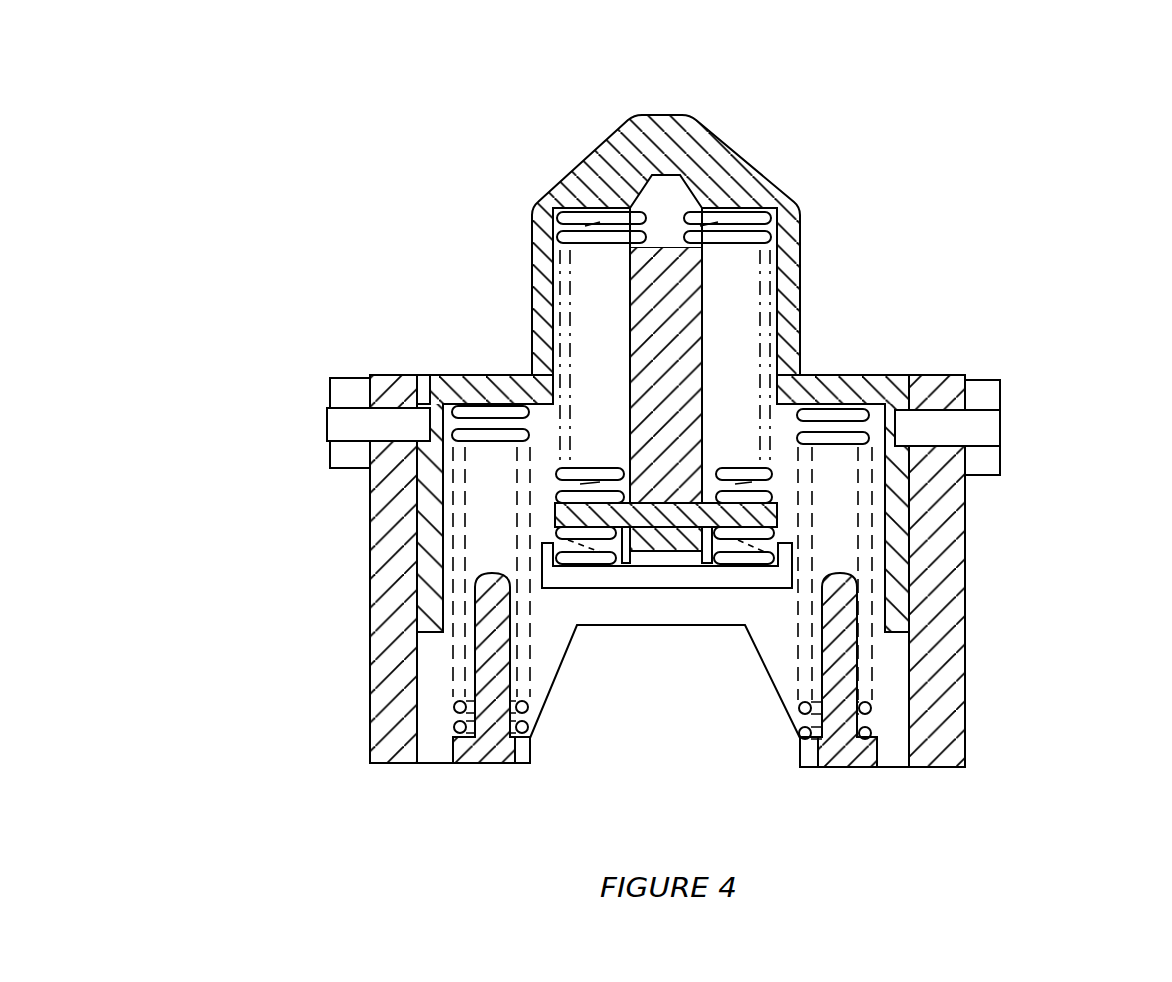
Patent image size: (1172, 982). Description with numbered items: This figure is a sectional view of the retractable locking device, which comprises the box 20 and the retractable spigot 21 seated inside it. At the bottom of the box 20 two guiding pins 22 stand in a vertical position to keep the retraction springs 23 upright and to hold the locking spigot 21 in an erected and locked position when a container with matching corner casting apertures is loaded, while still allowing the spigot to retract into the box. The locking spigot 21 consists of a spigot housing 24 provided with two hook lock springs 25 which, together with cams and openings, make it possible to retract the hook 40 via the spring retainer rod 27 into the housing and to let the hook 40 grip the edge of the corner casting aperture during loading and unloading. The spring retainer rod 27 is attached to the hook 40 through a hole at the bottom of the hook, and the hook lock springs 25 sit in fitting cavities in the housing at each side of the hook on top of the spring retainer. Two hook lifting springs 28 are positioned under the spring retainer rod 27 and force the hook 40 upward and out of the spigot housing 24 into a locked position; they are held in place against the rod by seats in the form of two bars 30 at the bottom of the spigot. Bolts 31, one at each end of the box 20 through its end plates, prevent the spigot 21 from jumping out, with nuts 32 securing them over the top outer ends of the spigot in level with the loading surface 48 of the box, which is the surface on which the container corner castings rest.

The box 20 is at (383, 750).
The retractable spigot 21 is at (672, 212).
The guiding pins 22 is at (488, 752).
The retraction springs 23 is at (808, 420).
The spigot housing 24 is at (693, 137).
The hook lock springs 25 is at (748, 238).
The spring retainer rod 27 is at (585, 515).
The hook lifting springs 28 is at (742, 560).
The bars 30 is at (610, 580).
The bolts 31 is at (347, 413).
The nut 32 is at (350, 425).
The hook 40 is at (683, 318).
The loading surface 48 is at (843, 386).